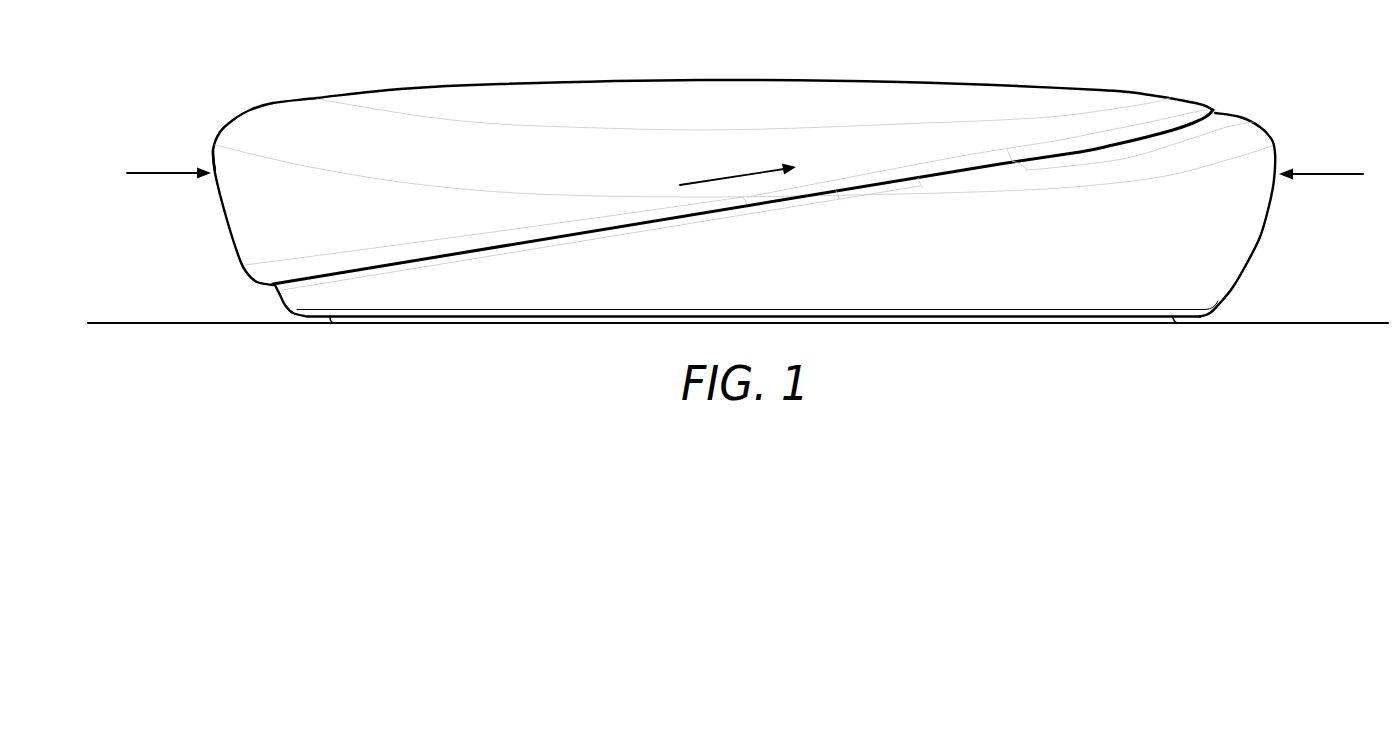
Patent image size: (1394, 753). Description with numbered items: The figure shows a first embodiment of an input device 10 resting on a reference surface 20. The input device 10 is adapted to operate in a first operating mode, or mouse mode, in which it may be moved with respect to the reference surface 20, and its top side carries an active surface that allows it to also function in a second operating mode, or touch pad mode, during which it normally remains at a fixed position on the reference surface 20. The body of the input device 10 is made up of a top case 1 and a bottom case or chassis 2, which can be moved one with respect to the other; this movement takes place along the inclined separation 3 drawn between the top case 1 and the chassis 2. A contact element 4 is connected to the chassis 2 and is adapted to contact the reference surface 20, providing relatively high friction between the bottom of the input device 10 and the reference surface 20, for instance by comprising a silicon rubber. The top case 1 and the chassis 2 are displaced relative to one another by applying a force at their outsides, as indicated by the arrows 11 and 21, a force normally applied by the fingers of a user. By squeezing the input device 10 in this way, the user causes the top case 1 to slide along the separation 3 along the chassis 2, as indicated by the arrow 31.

The input device 10 is at (1221, 71).
The top case 1 is at (231, 219).
The chassis 2 is at (1253, 238).
The inclined separation 3 is at (707, 212).
The contact element 4 is at (393, 318).
The arrow 11 is at (157, 170).
The arrow 21 is at (1332, 173).
The arrow 31 is at (752, 170).
The reference surface 20 is at (1353, 322).